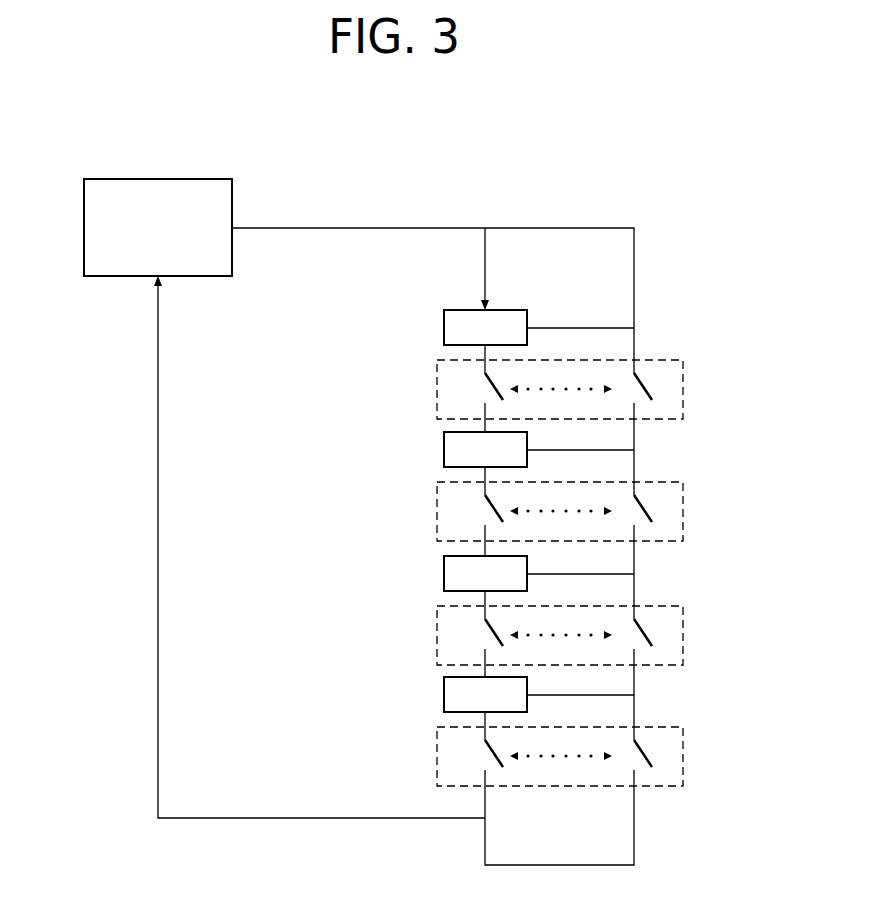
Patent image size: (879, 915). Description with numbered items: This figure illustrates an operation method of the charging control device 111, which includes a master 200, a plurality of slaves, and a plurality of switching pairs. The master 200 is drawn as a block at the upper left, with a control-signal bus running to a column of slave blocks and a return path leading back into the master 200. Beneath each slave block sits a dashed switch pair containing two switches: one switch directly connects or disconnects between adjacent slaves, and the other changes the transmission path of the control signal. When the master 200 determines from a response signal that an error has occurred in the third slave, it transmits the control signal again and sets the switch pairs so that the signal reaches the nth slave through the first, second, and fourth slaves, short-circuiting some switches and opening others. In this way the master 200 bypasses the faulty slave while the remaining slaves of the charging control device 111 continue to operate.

The charging control device 111 is at (128, 110).
The master 200 is at (84, 228).